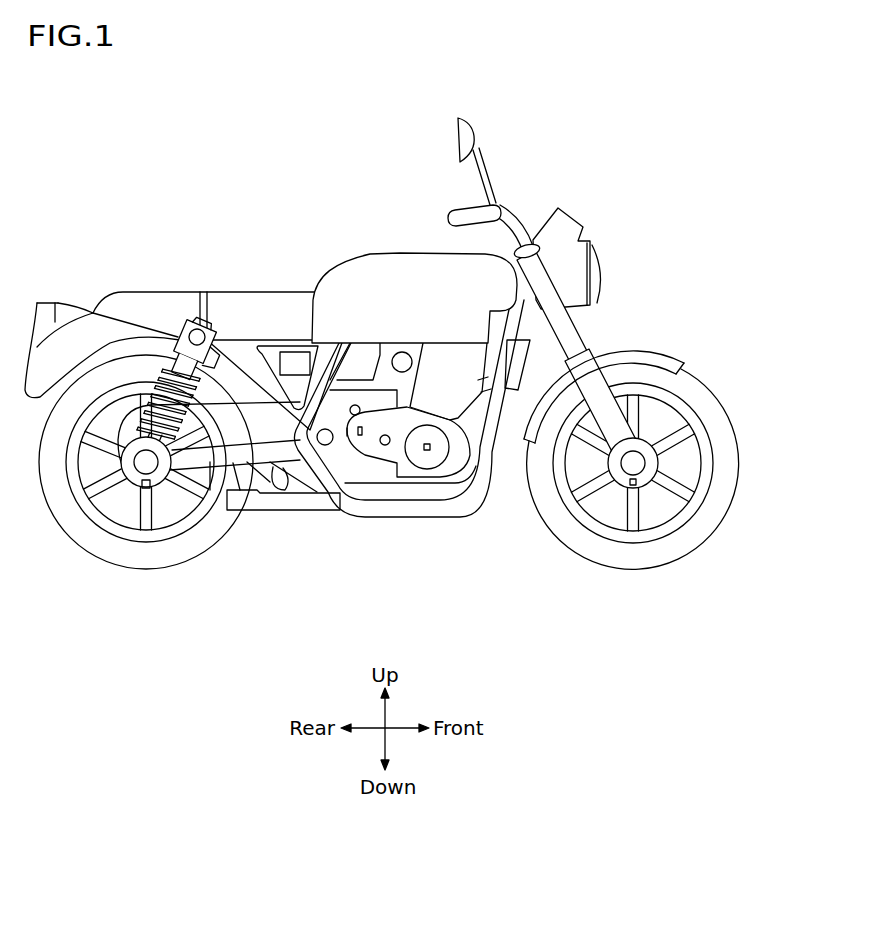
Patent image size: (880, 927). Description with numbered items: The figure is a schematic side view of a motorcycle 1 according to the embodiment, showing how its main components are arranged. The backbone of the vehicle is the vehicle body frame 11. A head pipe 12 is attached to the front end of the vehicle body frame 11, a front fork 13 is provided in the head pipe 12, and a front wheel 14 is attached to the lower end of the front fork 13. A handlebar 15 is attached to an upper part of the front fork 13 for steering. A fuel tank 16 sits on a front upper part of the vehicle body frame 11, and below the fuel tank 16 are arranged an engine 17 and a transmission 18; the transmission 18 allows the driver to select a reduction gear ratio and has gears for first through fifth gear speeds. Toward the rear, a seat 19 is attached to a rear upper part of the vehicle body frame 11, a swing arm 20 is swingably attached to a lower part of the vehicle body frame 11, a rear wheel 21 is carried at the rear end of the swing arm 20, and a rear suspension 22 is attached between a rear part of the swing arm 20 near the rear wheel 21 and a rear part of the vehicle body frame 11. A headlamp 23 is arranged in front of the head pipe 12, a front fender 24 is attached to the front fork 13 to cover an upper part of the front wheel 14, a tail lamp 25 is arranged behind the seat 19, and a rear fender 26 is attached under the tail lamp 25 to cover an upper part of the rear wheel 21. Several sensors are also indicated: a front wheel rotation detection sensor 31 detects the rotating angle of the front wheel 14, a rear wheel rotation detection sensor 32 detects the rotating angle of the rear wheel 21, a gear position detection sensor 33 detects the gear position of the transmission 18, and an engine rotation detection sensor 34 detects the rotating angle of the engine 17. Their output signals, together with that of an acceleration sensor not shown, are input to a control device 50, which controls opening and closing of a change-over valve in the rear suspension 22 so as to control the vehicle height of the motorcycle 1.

The motorcycle 1 is at (603, 144).
The vehicle body frame 11 is at (248, 340).
The head pipe 12 is at (570, 333).
The front fork 13 is at (610, 412).
The front wheel 14 is at (632, 550).
The handlebar 15 is at (462, 207).
The fuel tank 16 is at (390, 262).
The engine 17 is at (450, 463).
The transmission 18 is at (367, 462).
The seat 19 is at (218, 298).
The swing arm 20 is at (236, 455).
The rear wheel 21 is at (105, 552).
The rear suspension 22 is at (165, 347).
The headlamp 23 is at (603, 250).
The front fender 24 is at (653, 348).
The tail lamp 25 is at (45, 300).
The rear fender 26 is at (85, 330).
The front wheel rotation detection sensor 31 is at (641, 484).
The rear wheel rotation detection sensor 32 is at (147, 492).
The gear position detection sensor 33 is at (347, 433).
The engine rotation detection sensor 34 is at (427, 451).
The control device 50 is at (293, 352).